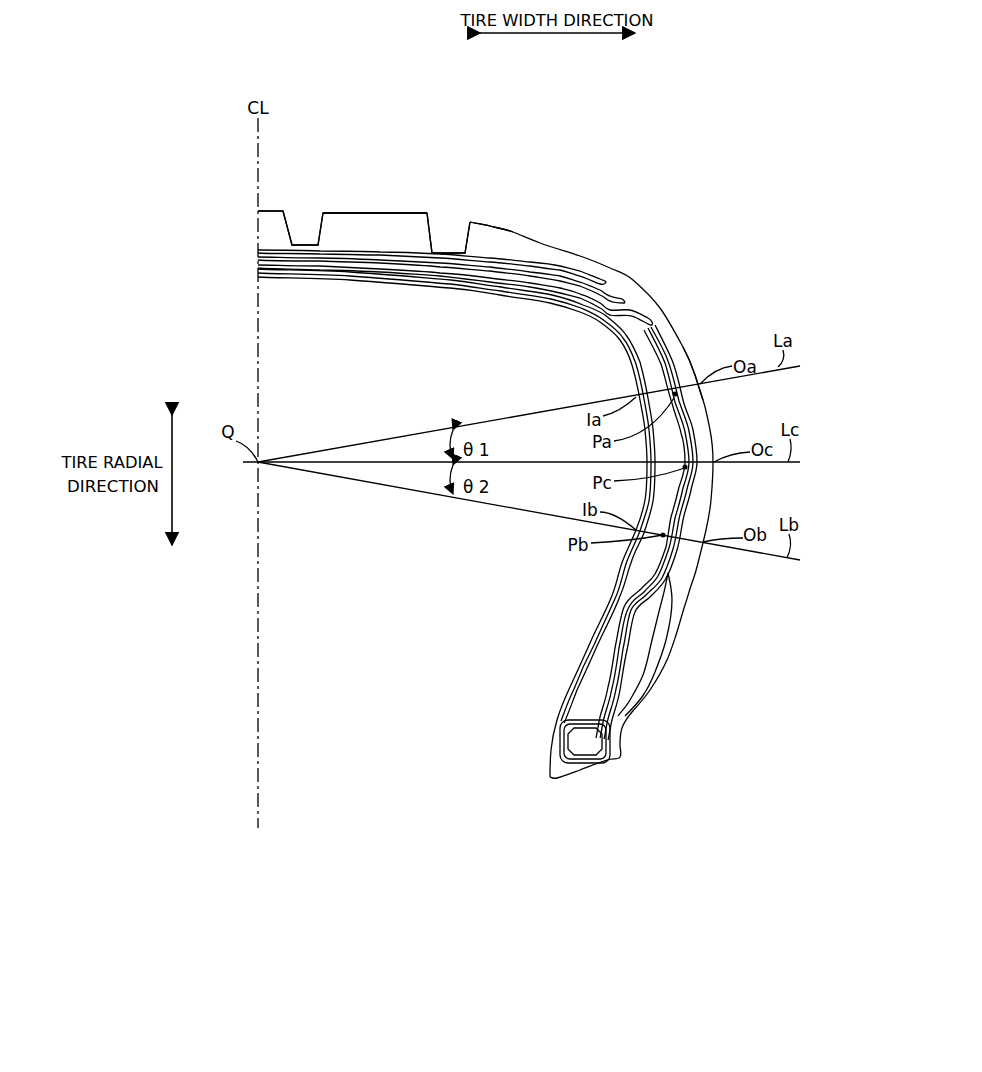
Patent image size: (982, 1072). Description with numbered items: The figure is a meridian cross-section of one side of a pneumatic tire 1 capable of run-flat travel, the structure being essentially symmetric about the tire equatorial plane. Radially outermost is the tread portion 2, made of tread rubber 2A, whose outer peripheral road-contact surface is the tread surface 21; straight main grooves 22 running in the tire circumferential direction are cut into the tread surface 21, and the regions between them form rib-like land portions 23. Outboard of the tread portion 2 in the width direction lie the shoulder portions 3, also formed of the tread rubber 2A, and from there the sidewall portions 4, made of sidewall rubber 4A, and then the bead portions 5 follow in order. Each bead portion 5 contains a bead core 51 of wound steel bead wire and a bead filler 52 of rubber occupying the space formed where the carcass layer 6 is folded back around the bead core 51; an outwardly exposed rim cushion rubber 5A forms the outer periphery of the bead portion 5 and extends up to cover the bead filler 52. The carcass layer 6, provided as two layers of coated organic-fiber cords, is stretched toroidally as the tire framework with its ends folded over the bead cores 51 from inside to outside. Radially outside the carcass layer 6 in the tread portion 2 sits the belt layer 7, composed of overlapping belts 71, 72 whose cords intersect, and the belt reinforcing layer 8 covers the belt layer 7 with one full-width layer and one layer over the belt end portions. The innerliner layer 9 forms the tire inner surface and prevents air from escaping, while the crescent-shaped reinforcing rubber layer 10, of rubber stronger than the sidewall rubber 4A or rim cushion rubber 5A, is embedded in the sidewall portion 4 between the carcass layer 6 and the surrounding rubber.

The pneumatic tire 1 is at (590, 139).
The tread portion 2 is at (381, 207).
The tread rubber 2A is at (485, 235).
The tread surface 21 is at (410, 217).
The main grooves 22 is at (317, 233).
The land portions 23 is at (270, 218).
The shoulder portions 3 is at (637, 275).
The sidewall portions 4 is at (716, 425).
The sidewall rubber 4A is at (687, 370).
The bead portions 5 is at (627, 734).
The rim cushion rubber 5A is at (643, 675).
The bead core 51 is at (578, 740).
The bead filler 52 is at (598, 677).
The carcass layer 6 is at (640, 347).
The belt layer 7 is at (497, 350).
The belt 71 is at (493, 282).
The belt 72 is at (453, 273).
The belt reinforcing layer 8 is at (574, 277).
The innerliner layer 9 is at (563, 313).
The reinforcing rubber layer 10 is at (628, 572).